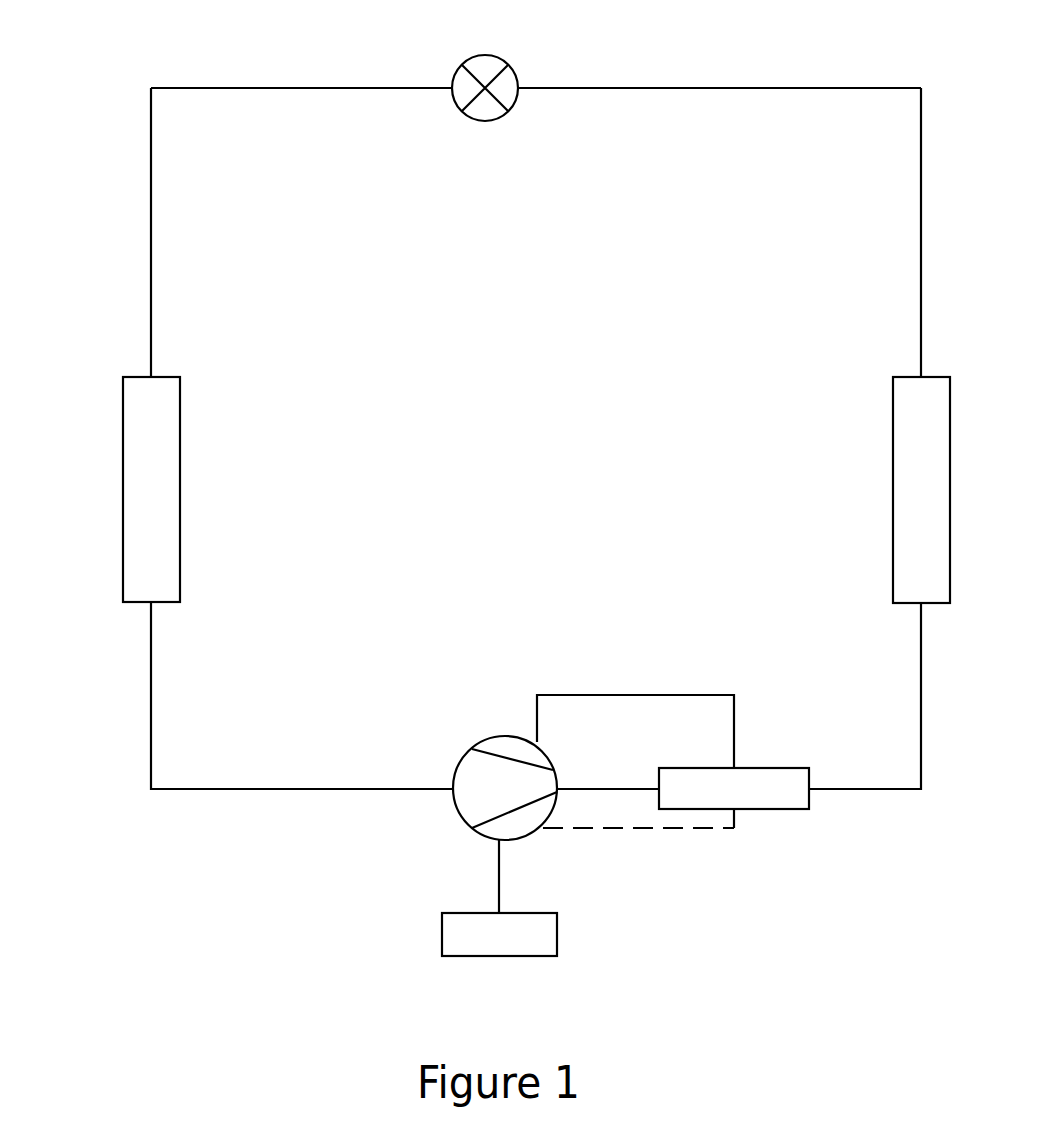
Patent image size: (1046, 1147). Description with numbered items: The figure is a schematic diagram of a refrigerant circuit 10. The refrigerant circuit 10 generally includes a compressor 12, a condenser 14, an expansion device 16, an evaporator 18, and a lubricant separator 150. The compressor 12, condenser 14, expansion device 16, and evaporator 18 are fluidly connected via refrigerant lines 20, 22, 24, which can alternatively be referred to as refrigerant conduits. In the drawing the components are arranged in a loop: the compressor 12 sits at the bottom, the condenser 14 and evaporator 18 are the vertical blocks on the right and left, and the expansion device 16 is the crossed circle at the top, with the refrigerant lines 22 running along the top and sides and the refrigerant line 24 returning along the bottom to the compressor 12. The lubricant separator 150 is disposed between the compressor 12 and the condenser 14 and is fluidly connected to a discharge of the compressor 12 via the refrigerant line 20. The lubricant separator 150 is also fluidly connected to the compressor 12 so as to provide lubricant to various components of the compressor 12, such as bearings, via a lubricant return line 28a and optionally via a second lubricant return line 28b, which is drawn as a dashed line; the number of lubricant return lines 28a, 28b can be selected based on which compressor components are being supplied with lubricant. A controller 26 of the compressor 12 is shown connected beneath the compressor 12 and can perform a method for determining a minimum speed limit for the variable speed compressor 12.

The refrigerant circuit 10 is at (90, 92).
The compressor 12 is at (502, 734).
The condenser 14 is at (889, 486).
The expansion device 16 is at (484, 124).
The evaporator 18 is at (184, 493).
The refrigerant line 20 is at (600, 788).
The refrigerant line 22 is at (151, 204).
The refrigerant line 24 is at (237, 789).
The controller 26 is at (499, 934).
The lubricant return line 28a is at (734, 710).
The second lubricant return line 28b is at (620, 830).
The lubricant separator 150 is at (734, 788).